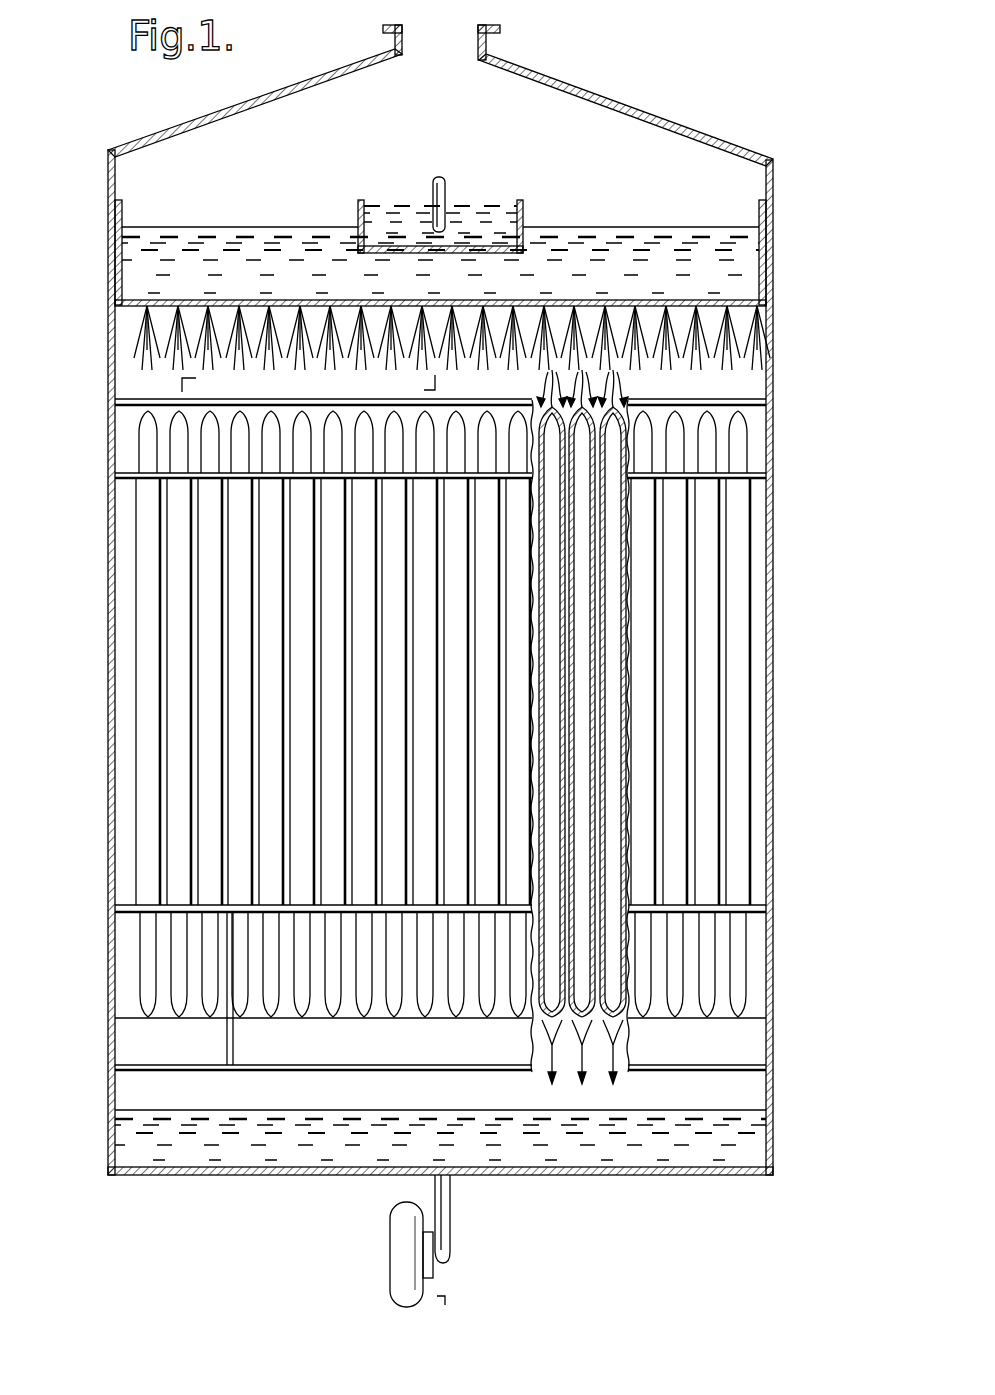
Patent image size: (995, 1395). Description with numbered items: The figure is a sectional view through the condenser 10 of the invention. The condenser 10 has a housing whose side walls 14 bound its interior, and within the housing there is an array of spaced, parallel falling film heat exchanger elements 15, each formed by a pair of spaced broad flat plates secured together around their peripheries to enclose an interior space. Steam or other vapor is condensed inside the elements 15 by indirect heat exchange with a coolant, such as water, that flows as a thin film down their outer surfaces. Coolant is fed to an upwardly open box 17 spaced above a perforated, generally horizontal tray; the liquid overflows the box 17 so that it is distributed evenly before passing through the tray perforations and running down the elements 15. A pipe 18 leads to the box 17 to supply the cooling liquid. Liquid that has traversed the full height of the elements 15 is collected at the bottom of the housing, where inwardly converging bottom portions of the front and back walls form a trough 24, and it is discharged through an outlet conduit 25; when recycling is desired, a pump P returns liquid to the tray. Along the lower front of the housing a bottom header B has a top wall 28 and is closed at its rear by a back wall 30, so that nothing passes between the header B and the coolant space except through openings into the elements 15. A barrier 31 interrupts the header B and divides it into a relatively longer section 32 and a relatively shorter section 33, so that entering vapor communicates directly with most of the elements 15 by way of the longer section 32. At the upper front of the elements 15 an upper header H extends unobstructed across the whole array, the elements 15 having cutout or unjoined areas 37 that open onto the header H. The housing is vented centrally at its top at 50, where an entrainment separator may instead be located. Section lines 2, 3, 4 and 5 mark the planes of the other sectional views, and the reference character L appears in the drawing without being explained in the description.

The condenser 10 is at (804, 170).
The side walls 14 is at (108, 717).
The falling film heat exchanger elements 15 is at (582, 727).
The upwardly open box 17 is at (524, 212).
The pipe 18 is at (433, 182).
The trough 24 is at (758, 1100).
The outlet conduit 25 is at (444, 1213).
The top wall 28 is at (745, 906).
The back wall 30 is at (130, 936).
The barrier 31 is at (234, 1048).
The relatively longer section 32 is at (698, 1056).
The relatively shorter section 33 is at (188, 1056).
The cutout or unjoined areas 37 is at (333, 418).
The vent 50 is at (512, 52).
The section line 2- 2 is at (440, 102).
The section line 3- 3 is at (440, 133).
The section line 4- 4 is at (53, 400).
The section line 5- 5 is at (46, 930).
The upper header H is at (786, 396).
The bottom header B is at (790, 1044).
The pump P is at (374, 1258).
The liquid L is at (188, 1285).